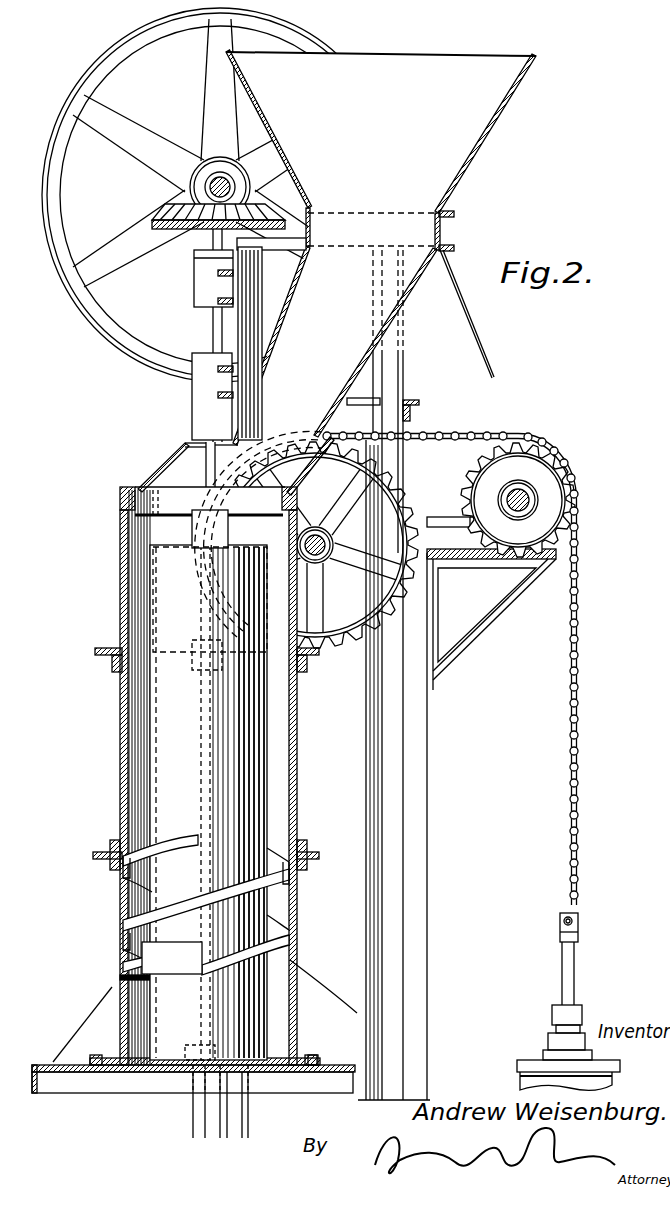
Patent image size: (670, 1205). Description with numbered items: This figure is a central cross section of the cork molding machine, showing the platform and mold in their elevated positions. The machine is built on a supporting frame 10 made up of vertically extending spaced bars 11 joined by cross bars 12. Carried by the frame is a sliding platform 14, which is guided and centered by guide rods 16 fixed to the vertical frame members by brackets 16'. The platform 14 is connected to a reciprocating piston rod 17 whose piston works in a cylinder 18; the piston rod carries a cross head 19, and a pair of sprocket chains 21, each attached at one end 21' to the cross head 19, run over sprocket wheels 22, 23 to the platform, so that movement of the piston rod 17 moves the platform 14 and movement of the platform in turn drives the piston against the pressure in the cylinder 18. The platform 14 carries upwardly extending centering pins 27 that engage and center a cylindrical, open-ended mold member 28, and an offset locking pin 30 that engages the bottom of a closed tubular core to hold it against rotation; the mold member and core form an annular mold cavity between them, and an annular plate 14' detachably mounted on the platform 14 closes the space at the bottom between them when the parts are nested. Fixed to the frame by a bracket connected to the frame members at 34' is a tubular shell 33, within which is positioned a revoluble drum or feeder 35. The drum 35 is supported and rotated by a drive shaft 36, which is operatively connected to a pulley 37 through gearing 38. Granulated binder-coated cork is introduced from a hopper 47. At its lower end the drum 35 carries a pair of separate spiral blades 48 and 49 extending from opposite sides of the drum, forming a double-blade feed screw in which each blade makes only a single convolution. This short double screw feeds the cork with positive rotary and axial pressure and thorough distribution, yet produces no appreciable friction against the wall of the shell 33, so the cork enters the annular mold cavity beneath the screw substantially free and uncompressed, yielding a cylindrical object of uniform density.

The supporting frame 10 is at (420, 742).
The vertically extending spaced bars 11 is at (385, 798).
The cross bars 12 is at (447, 237).
The sliding platform 14 is at (192, 1098).
The annular plate 14' is at (193, 1093).
The guide rods 16 is at (201, 1110).
The brackets 16' is at (210, 580).
The piston rod 17 is at (572, 987).
The cylinder 18 is at (535, 1072).
The cross head 19 is at (560, 938).
The sprocket chains 21 is at (473, 668).
The chain end 21' is at (595, 908).
The sprocket wheel 22 is at (540, 466).
The sprocket wheel 23 is at (352, 632).
The centering pins 27 is at (315, 1064).
The mold member 28 is at (120, 806).
The locking pin 30 is at (173, 1060).
The shell 33 is at (122, 556).
The bracket connection 34' is at (179, 502).
The drum 35 is at (162, 592).
The drive shaft 36 is at (205, 457).
The pulley 37 is at (90, 262).
The gearing 38 is at (175, 215).
The hopper 47 is at (395, 68).
The blade 48 is at (140, 868).
The blade 49 is at (272, 930).